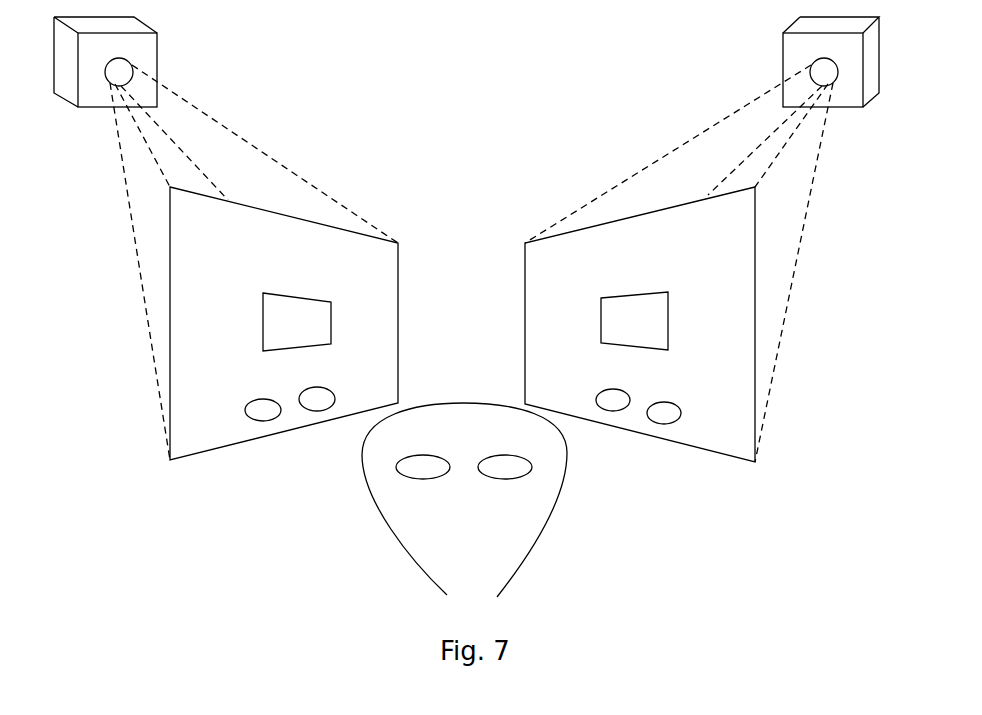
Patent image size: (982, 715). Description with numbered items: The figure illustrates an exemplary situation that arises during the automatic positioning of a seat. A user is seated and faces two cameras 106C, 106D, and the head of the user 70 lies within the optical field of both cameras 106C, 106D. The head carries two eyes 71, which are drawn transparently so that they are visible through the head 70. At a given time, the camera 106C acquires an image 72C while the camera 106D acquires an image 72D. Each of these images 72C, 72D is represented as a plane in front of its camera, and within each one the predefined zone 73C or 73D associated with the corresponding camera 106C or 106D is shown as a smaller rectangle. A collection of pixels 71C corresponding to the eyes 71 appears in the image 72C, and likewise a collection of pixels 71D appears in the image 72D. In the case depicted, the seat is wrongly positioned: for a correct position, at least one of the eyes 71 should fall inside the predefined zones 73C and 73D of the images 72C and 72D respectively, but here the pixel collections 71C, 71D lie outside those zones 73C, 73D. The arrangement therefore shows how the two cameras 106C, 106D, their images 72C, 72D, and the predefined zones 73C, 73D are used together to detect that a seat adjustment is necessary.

The camera 106C is at (157, 60).
The camera 106D is at (784, 68).
The image 72C is at (190, 460).
The image 72D is at (715, 448).
The predefined zone 73C is at (287, 295).
The predefined zone 73D is at (627, 299).
The collection of pixels 71C is at (285, 403).
The collection of pixels 71D is at (641, 403).
The head of the user 70 is at (413, 563).
The eyes 71 is at (470, 474).